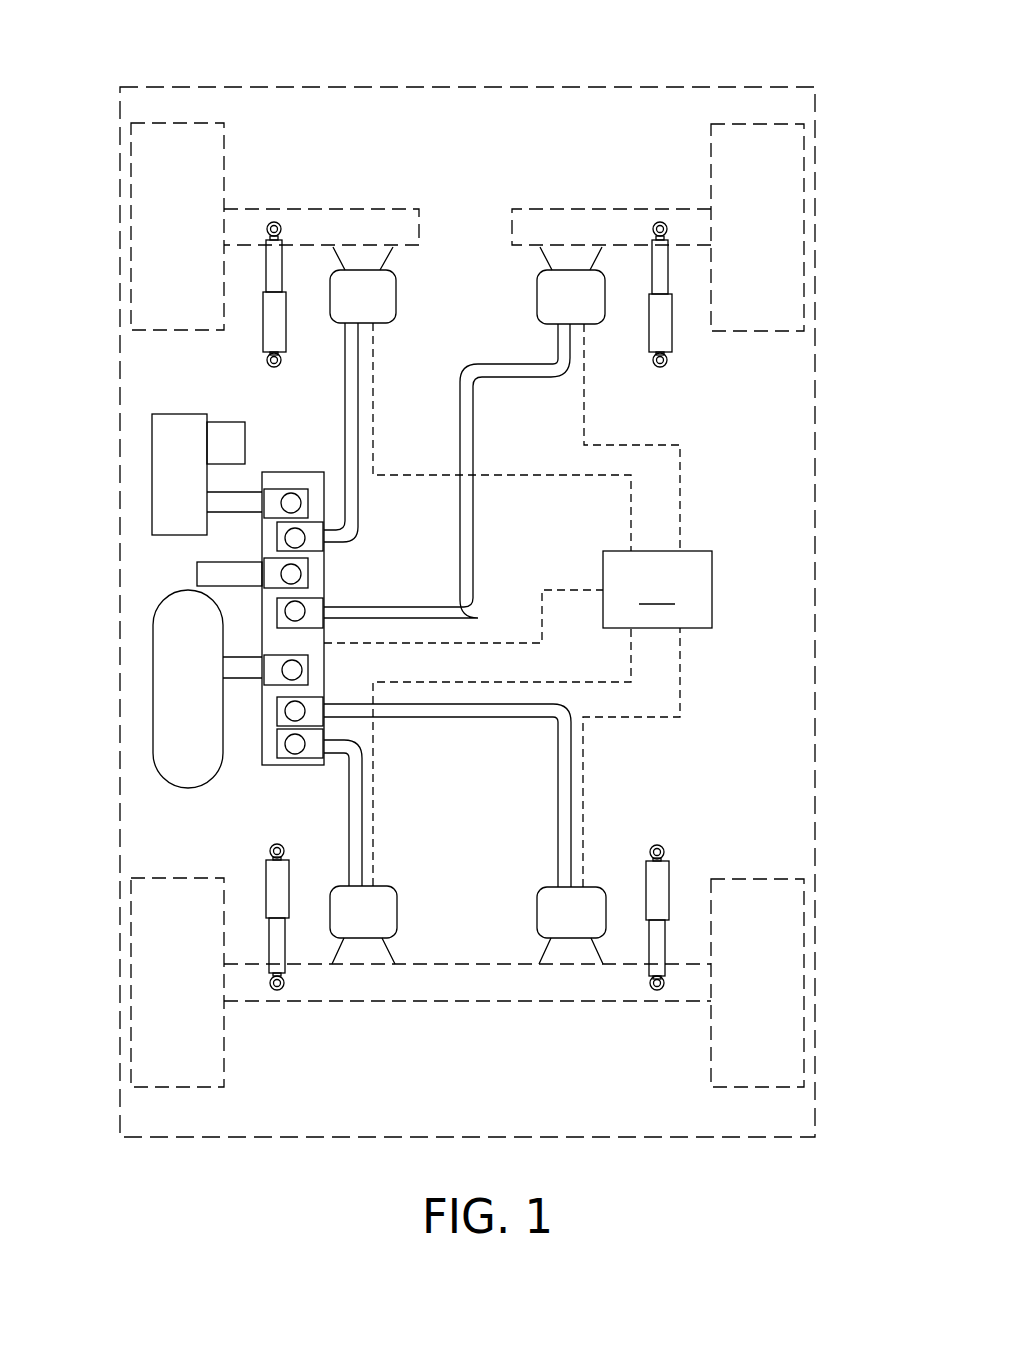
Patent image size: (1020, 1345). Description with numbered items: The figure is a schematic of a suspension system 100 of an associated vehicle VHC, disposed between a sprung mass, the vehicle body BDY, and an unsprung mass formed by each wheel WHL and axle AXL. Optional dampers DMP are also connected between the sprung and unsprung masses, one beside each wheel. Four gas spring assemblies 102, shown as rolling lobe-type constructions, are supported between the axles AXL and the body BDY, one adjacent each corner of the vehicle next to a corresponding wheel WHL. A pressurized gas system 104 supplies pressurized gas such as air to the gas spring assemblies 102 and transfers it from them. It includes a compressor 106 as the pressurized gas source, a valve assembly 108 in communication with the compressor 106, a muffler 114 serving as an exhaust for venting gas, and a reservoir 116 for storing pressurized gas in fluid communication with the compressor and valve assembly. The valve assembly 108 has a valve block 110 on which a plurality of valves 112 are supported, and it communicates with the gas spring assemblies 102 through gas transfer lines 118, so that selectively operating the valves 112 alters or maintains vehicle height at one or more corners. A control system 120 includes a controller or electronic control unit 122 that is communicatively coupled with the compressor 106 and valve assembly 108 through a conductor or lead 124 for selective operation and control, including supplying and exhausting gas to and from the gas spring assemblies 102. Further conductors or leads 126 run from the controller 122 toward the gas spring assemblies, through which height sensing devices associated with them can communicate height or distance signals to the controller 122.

The suspension system 100 is at (493, 583).
The gas spring assembly 102 is at (404, 281).
The pressurized gas system 104 is at (230, 610).
The compressor 106 is at (162, 432).
The valve assembly 108 is at (335, 610).
The valve block 110 is at (293, 766).
The valves 112 is at (304, 540).
The muffler 114 is at (197, 572).
The reservoir 116 is at (165, 676).
The gas transfer lines 118 is at (362, 511).
The control system 120 is at (553, 605).
The controller or electronic control unit (ECU) 122 is at (657, 589).
The conductor or lead 124 is at (508, 642).
The conductors or leads 126 is at (373, 378).
The vehicle body BDY is at (622, 83).
The vehicle VHC is at (830, 109).
The wheel WHL is at (148, 205).
The axle AXL is at (330, 222).
The damper DMP is at (263, 333).